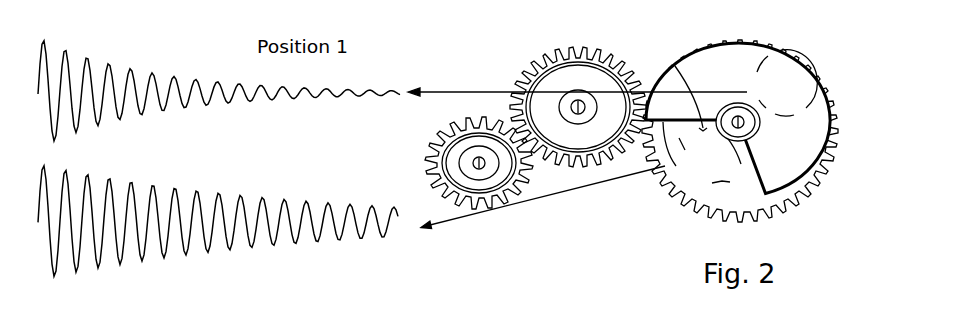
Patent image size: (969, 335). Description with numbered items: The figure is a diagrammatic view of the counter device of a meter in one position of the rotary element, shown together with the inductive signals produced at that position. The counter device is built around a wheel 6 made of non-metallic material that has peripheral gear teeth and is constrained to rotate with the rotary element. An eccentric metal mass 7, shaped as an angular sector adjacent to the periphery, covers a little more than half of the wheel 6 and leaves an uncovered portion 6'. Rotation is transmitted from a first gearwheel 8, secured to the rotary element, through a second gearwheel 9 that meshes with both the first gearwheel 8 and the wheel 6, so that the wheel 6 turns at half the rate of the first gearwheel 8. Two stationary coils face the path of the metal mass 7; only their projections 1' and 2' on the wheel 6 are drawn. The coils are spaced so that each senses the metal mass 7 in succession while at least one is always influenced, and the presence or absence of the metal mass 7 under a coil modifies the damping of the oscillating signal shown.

The projection of the coil 1' is at (791, 67).
The projection of the coil 2' is at (688, 74).
The wheel 6 is at (740, 138).
The uncovered portion of the wheel 6' is at (704, 210).
The eccentric metal mass 7 is at (764, 50).
The first gearwheel 8 is at (520, 200).
The second gearwheel 9 is at (610, 180).